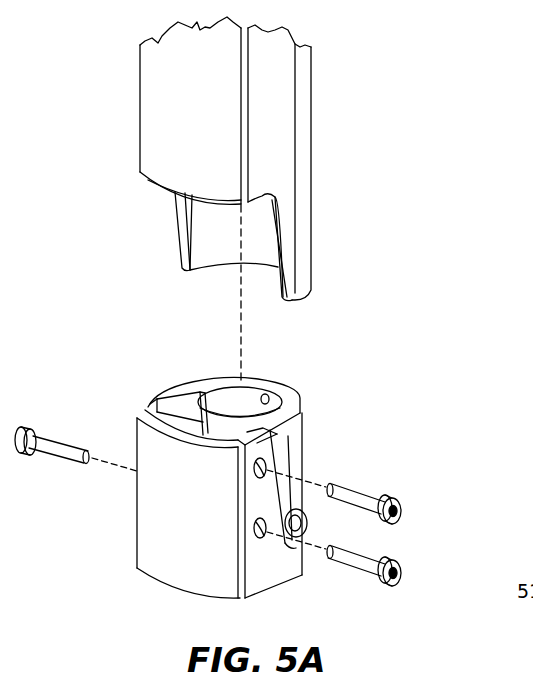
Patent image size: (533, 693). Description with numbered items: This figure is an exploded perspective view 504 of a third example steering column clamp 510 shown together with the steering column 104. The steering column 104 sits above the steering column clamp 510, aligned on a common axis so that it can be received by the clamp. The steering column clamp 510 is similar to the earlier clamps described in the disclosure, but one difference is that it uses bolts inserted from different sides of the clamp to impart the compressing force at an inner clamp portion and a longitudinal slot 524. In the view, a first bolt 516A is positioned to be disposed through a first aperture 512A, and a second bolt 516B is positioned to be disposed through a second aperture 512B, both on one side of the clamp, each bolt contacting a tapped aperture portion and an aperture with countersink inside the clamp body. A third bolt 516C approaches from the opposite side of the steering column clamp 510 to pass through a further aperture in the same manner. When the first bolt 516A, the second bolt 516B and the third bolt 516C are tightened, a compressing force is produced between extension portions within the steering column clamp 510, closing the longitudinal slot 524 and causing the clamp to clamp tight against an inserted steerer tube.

The exploded perspective view 504 is at (410, 73).
The steering column 104 is at (300, 170).
The steering column clamp 510 is at (200, 573).
The longitudinal slot 524 is at (188, 392).
The first aperture 512A is at (262, 530).
The second aperture 512B is at (266, 466).
The first bolt 516A is at (396, 565).
The second bolt 516B is at (394, 500).
The third bolt 516C is at (40, 436).